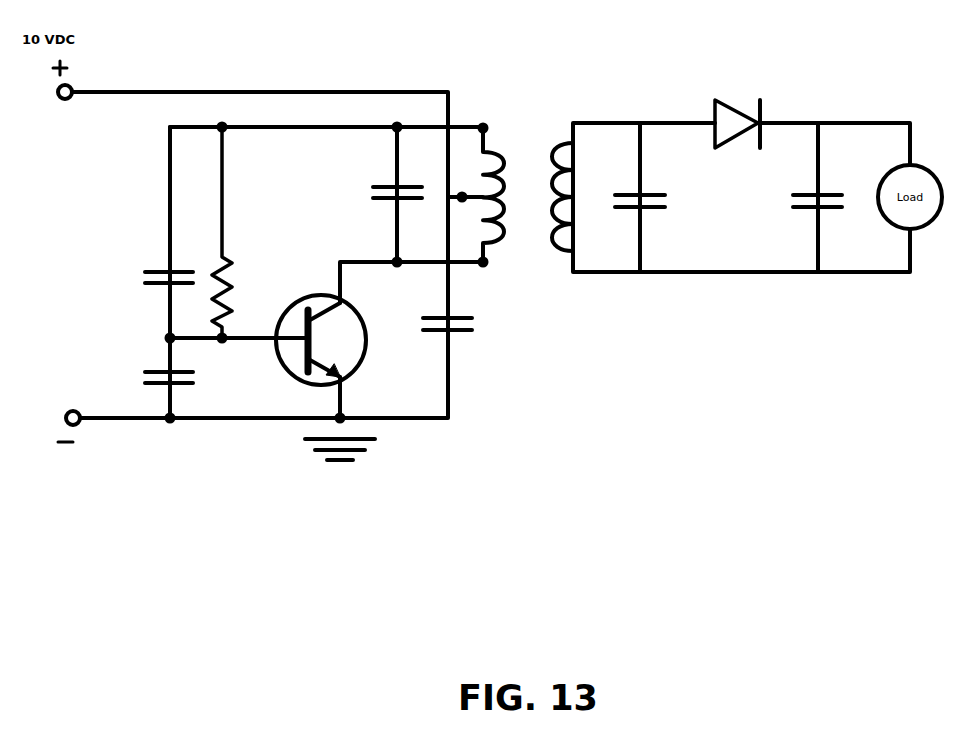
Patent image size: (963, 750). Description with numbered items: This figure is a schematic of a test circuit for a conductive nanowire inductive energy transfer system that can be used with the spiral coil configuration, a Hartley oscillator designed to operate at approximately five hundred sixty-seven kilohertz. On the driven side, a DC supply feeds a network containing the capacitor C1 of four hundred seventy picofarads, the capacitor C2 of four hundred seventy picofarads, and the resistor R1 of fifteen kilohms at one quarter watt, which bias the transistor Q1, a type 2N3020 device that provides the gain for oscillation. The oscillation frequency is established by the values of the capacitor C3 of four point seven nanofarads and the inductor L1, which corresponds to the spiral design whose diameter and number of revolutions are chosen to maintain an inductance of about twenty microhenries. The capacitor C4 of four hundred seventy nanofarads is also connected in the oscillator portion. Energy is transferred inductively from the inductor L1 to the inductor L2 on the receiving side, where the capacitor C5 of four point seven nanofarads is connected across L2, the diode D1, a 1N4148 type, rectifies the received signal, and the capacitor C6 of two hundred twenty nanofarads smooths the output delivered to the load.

The capacitor C1 is at (155, 270).
The capacitor C2 is at (155, 370).
The capacitor C3 is at (386, 194).
The capacitor C4 is at (441, 310).
The capacitor C5 is at (635, 197).
The capacitor C6 is at (816, 197).
The resistor R1 is at (209, 232).
The transistor Q1 is at (321, 330).
The inductor L1 is at (498, 194).
The inductor L2 is at (557, 187).
The diode D1 is at (737, 112).